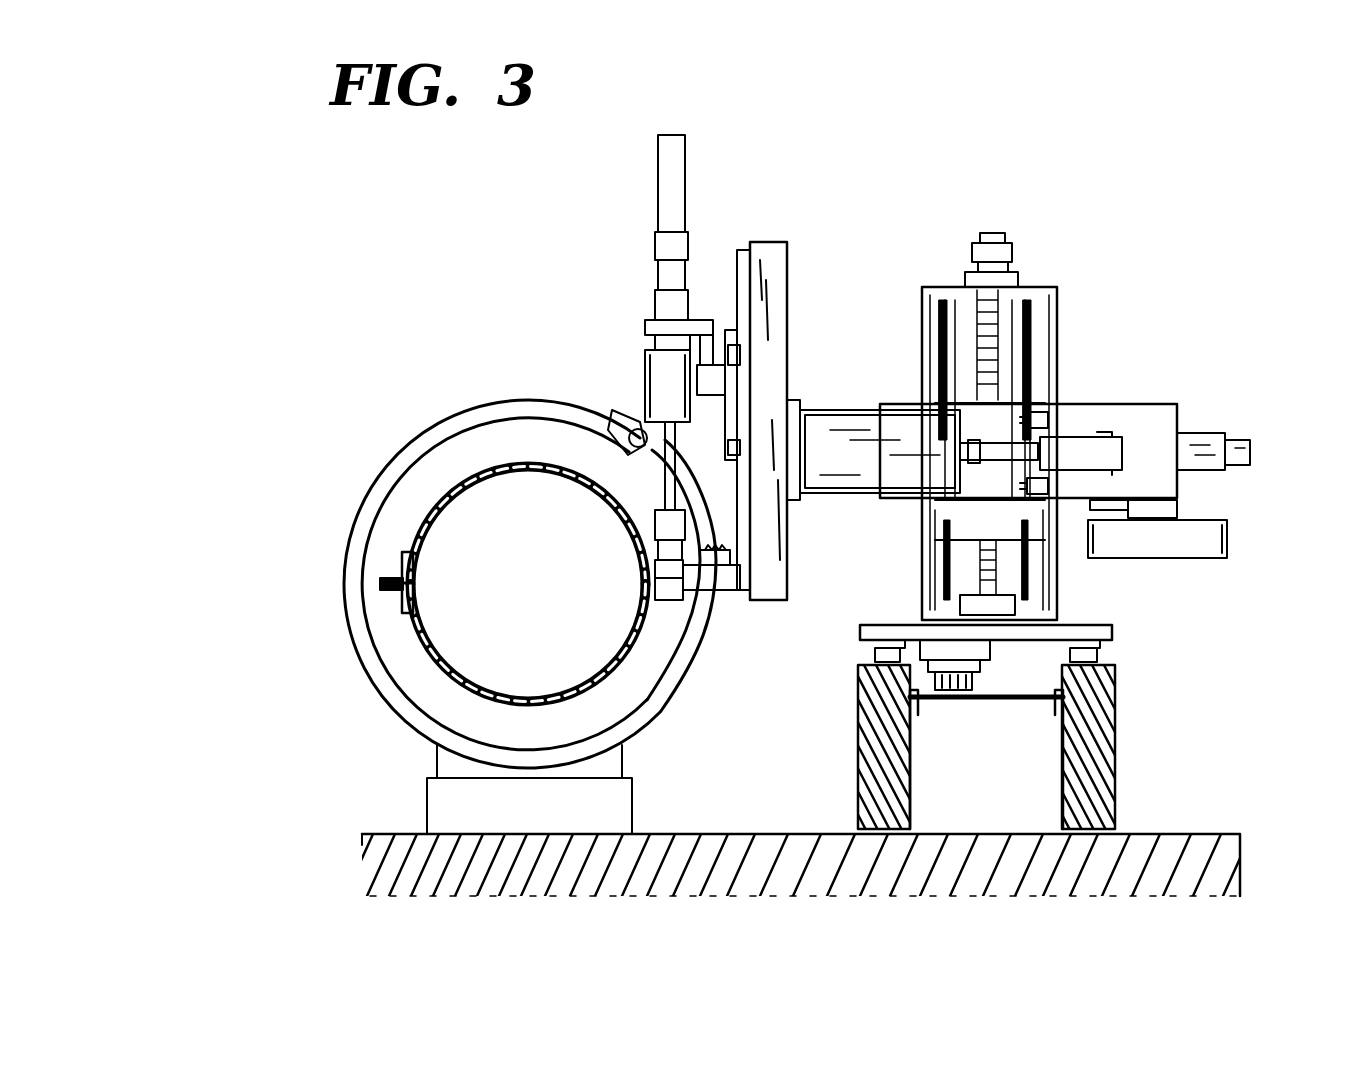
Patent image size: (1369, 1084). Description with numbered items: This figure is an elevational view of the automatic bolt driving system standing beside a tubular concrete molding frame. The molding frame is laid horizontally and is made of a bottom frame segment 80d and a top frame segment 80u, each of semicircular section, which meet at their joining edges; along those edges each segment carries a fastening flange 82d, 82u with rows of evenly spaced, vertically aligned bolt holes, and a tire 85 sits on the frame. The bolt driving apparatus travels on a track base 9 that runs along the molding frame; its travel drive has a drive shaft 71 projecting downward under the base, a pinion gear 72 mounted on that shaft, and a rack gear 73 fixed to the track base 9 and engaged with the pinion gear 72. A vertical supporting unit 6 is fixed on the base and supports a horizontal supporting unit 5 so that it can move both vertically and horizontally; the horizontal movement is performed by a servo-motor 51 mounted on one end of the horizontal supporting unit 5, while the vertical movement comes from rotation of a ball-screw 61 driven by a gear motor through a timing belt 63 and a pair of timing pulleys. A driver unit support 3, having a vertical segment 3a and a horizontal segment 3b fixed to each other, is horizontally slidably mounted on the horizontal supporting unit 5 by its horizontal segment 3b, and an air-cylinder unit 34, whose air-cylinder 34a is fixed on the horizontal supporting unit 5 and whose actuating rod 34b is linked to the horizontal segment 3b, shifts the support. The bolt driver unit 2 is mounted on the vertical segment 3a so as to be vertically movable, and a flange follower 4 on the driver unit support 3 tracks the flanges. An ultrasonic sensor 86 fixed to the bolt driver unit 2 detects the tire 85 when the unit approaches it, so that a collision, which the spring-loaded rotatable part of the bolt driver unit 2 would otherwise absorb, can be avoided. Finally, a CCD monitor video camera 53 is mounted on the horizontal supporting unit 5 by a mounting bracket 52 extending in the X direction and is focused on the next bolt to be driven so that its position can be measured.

The bolt driver unit 2 is at (655, 262).
The driver unit support 3 is at (770, 240).
The vertical segment 3a is at (777, 362).
The horizontal segment 3b is at (848, 472).
The flange follower 4 is at (728, 616).
The horizontal supporting unit 5 is at (1175, 402).
The vertical supporting unit 6 is at (1062, 302).
The track base 9 is at (1116, 757).
The air-cylinder unit 34 is at (1090, 436).
The air-cylinder 34a is at (1108, 453).
The actuating rod 34b is at (988, 447).
The servo-motor 51 is at (1250, 452).
The mounting bracket 52 is at (1180, 510).
The video camera 53 is at (1208, 552).
The ball-screw 61 is at (972, 302).
The timing belt 63 is at (1008, 240).
The drive shaft 71 is at (990, 665).
The pinion gear 72 is at (955, 690).
The rack gear 73 is at (930, 672).
The top frame segment 80u is at (478, 482).
The bottom frame segment 80d is at (445, 672).
The fastening flange 82u is at (382, 583).
The fastening flange 82d is at (392, 589).
The tire 85 is at (385, 470).
The ultrasonic sensor 86 is at (620, 405).